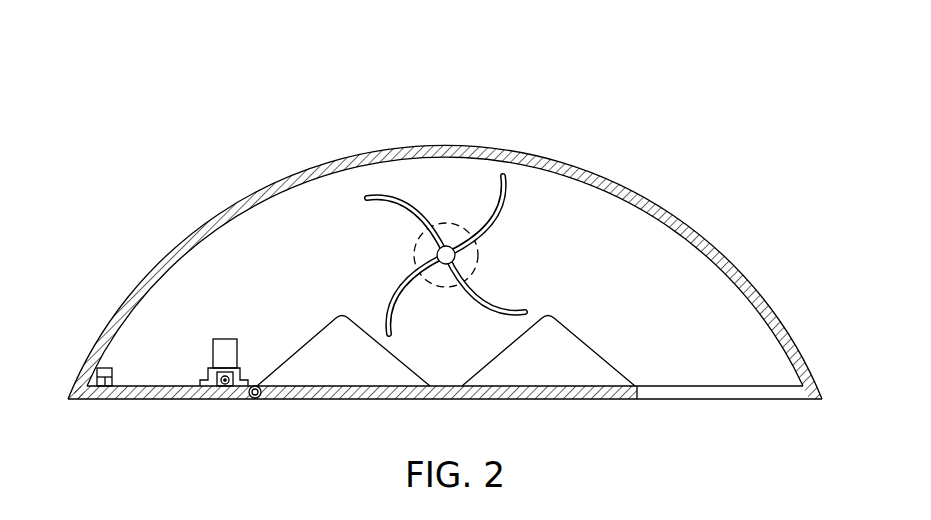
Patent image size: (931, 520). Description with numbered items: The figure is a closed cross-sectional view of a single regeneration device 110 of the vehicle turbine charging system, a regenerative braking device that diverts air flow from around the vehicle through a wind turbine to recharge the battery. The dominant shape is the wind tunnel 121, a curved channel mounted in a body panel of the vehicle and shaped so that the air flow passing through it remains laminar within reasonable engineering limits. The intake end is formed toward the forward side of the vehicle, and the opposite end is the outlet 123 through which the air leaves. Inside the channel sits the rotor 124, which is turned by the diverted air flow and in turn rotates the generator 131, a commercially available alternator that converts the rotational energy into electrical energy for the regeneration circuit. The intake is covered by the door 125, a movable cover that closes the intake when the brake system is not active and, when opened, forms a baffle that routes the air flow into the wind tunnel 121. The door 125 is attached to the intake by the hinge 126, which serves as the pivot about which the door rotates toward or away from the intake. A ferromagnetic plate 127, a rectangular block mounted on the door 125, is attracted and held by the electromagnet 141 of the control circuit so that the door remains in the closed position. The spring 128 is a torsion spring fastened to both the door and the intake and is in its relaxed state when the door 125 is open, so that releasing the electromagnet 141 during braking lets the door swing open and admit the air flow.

The regeneration device 110 is at (163, 70).
The wind tunnel 121 is at (600, 215).
The outlet 123 is at (712, 387).
The rotor 124 is at (505, 196).
The door 125 is at (138, 400).
The hinge 126 is at (252, 400).
The ferromagnetic plate 127 is at (100, 400).
The spring 128 is at (222, 362).
The generator 131 is at (455, 224).
The electromagnet 141 is at (113, 368).